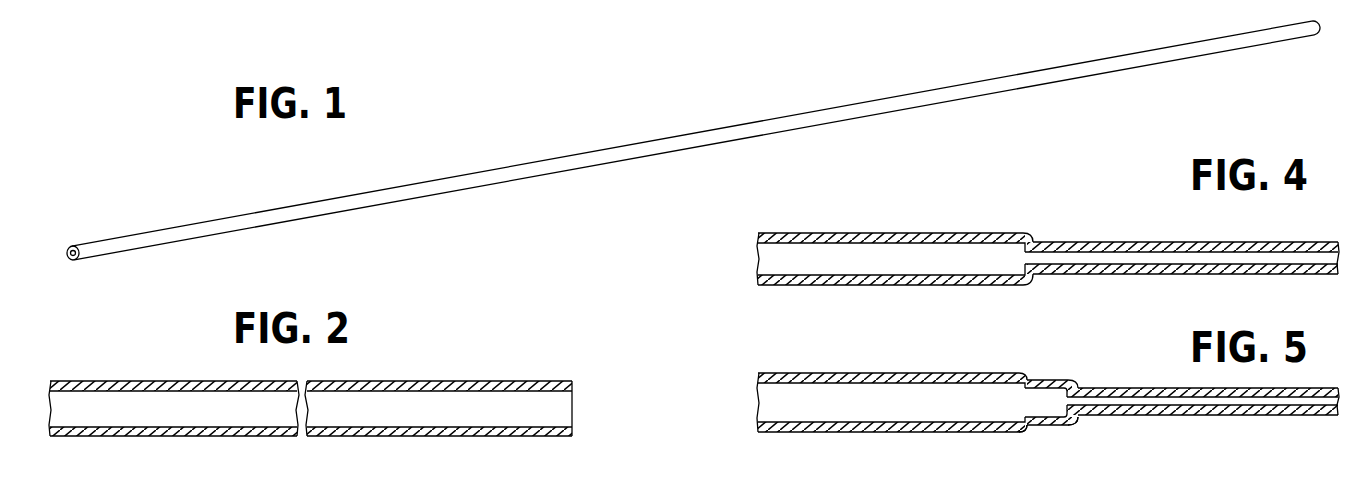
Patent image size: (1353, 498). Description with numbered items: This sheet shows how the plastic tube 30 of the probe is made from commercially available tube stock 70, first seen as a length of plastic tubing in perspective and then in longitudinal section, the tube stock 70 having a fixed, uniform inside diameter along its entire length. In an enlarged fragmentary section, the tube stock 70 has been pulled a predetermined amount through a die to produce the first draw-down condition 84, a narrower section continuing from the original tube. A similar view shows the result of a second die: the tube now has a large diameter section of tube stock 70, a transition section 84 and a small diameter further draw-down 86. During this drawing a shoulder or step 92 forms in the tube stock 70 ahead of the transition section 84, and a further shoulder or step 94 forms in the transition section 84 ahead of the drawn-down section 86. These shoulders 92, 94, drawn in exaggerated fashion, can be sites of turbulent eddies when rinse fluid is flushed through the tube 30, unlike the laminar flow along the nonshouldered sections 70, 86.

In FIG. 5, the plastic tube 30 is at (1048, 406).
In FIG. 1, the tube stock 70 is at (524, 164).
In FIG. 2, the tube stock 70 is at (415, 381).
In FIG. 4, the tube stock 70 is at (908, 233).
In FIG. 5, the tube stock 70 is at (908, 373).
In FIG. 4, the first draw-down condition 84 is at (1130, 242).
In FIG. 5, the first draw-down condition 84 is at (1047, 380).
In FIG. 5, the further draw-down 86 is at (1130, 388).
In FIG. 5, the shoulder or step 92 is at (1030, 430).
In FIG. 5, the shoulder or step 94 is at (1075, 420).